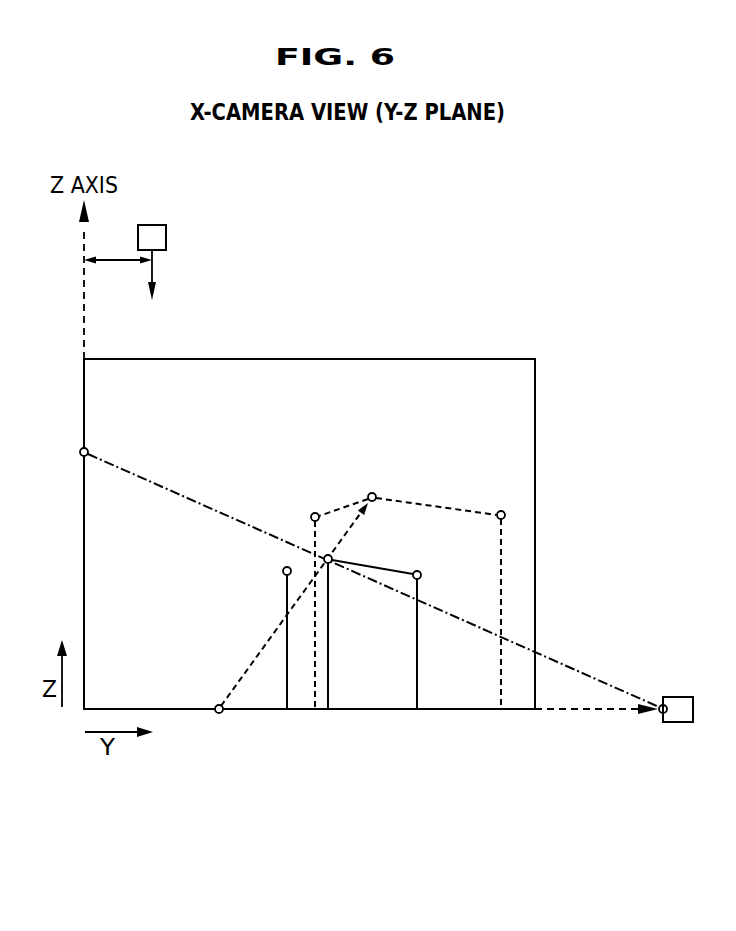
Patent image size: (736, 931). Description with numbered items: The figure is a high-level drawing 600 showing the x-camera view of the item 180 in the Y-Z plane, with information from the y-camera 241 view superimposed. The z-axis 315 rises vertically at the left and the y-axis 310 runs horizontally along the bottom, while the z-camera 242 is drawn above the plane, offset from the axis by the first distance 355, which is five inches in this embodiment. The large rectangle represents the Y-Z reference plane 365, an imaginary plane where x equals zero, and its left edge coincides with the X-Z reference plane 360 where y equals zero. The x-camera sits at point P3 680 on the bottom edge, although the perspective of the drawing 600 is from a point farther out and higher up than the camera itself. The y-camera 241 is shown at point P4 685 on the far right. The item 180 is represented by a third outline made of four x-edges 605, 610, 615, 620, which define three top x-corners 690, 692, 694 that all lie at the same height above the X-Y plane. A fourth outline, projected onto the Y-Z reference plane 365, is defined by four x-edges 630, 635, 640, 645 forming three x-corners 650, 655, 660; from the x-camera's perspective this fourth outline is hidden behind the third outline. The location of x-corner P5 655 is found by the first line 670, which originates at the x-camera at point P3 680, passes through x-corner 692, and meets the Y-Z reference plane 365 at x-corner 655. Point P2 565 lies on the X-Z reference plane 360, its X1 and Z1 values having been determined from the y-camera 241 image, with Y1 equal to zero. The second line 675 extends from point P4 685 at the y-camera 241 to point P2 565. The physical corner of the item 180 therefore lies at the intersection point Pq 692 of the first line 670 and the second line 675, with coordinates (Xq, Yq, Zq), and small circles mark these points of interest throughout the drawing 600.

The high-level drawing 600 is at (530, 215).
The X-Z reference plane 360 is at (84, 590).
The Y-Z reference plane 365 is at (498, 380).
The z-axis 315 is at (82, 235).
The z-camera 242 is at (153, 225).
The first distance 355 is at (118, 262).
The point P2 565 is at (88, 448).
The second line P4-P2 675 is at (155, 478).
The first line P3-P5 670 is at (235, 685).
The point P3 680 is at (218, 714).
The x-corner P5 655 is at (375, 493).
The x-edge 635 is at (352, 505).
The x-edge 640 is at (423, 505).
The x-corner 650 is at (315, 513).
The x-edge 630 is at (313, 552).
The x-corner 660 is at (505, 512).
The x-edge 645 is at (503, 595).
The x-corner Pq 692 is at (324, 559).
The x-edge 605 is at (298, 707).
The x-edge 615 is at (375, 563).
The x-corner 694 is at (422, 573).
The x-edge 620 is at (418, 672).
The x-corner 690 is at (283, 573).
The x-edge 610 is at (285, 605).
The item 180 is at (375, 680).
The y-axis 310 is at (578, 712).
The point P4 685 is at (660, 713).
The y-camera 241 is at (677, 722).